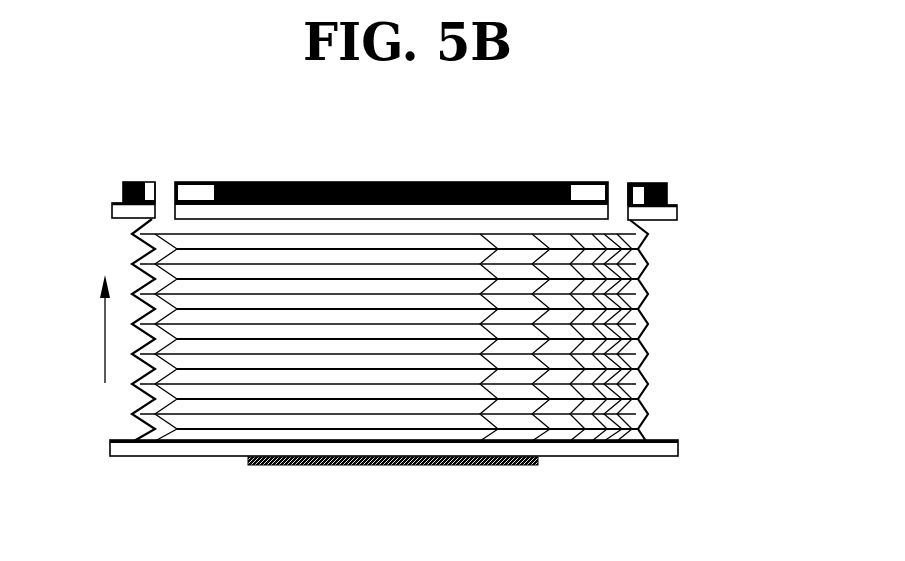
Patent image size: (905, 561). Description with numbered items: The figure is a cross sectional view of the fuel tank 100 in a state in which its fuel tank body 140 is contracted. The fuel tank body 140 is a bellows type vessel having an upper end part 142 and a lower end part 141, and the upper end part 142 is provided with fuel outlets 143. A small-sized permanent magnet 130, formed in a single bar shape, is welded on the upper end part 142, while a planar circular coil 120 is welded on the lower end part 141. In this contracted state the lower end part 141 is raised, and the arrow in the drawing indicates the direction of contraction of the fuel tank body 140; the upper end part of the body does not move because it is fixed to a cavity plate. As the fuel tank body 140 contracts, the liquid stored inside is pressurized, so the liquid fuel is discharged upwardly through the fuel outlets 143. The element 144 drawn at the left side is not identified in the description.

The fuel tank 100 is at (138, 145).
The planar circular coil 120 is at (535, 465).
The permanent magnet 130 is at (325, 182).
The fuel tank body 140 is at (647, 347).
The lower end part 141 is at (678, 449).
The upper end part 142 is at (677, 214).
The fuel outlets 143 is at (167, 188).
The left side member 144 is at (122, 185).